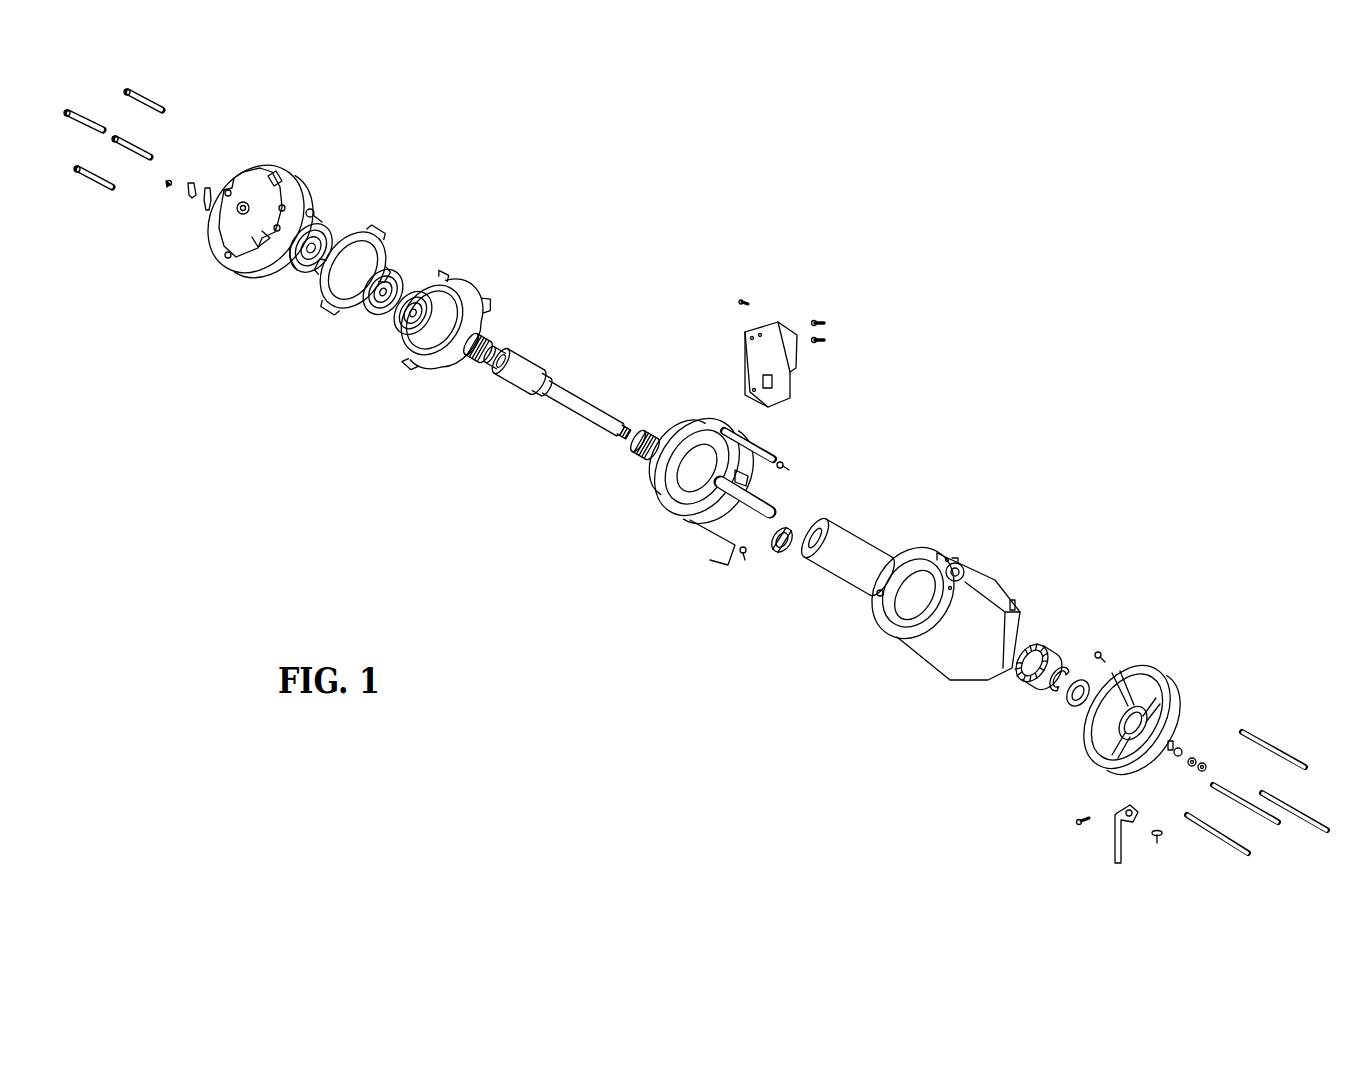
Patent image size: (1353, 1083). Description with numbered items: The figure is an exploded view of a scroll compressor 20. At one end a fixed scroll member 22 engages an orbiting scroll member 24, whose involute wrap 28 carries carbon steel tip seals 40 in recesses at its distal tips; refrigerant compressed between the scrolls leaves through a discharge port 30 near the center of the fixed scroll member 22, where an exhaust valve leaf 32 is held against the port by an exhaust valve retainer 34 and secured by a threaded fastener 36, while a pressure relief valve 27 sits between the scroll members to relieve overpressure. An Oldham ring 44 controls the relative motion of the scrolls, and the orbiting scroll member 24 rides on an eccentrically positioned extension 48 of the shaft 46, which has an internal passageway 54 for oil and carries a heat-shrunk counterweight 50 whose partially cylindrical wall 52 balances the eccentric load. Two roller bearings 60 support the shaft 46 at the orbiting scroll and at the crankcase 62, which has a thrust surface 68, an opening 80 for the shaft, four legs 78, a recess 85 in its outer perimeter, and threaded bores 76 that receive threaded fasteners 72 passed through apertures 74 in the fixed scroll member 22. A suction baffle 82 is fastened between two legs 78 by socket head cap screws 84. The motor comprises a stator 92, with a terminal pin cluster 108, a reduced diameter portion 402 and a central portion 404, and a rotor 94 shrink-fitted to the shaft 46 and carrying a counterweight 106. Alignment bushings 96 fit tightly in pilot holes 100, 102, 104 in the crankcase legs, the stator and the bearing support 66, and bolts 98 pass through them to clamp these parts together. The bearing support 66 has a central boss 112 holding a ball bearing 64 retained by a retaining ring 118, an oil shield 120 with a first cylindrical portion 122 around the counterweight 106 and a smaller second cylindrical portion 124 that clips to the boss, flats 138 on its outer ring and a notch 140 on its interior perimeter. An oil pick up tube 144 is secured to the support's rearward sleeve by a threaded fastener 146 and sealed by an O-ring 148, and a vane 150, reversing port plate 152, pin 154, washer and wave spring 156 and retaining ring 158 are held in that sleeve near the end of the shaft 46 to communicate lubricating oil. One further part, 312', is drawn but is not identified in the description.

The scroll compressor 20 is at (942, 271).
The fixed scroll member 22 is at (298, 200).
The orbiting scroll member 24 is at (445, 290).
The pressure relief valve 27 is at (311, 211).
The involute wrap 28 is at (413, 305).
The discharge port 30 is at (247, 203).
The exhaust valve leaf 32 is at (207, 210).
The exhaust valve retainer 34 is at (188, 200).
The threaded fastener 36 is at (166, 185).
The tip seals 40 is at (318, 226).
The Oldham ring 44 is at (370, 240).
The shaft 46 is at (577, 410).
The eccentrically positioned extension 48 is at (500, 377).
The counterweight 50 is at (527, 353).
The partially cylindrical wall 52 is at (545, 380).
The internal passageway 54 is at (500, 362).
The roller bearings 60 is at (473, 367).
The crankcase 62 is at (713, 515).
The ball bearing 64 is at (1068, 706).
The bearing support 66 is at (1162, 668).
The thrust surface 68 is at (680, 493).
The threaded fasteners 72 is at (92, 170).
The apertures 74 is at (228, 190).
The threaded bores 76 is at (710, 433).
The legs 78 is at (775, 458).
The opening 80 is at (700, 467).
The suction baffle 82 is at (748, 479).
The socket head cap screws 84 is at (745, 302).
The recess 85 is at (733, 433).
The stator 92 is at (933, 662).
The rotor 94 is at (882, 553).
The alignment bushings 96 is at (784, 467).
The bolts 98 is at (1290, 769).
The pilot holes 100 is at (733, 540).
The pilot holes 102 is at (950, 560).
The pilot holes 104 is at (1097, 764).
The counterweight 106 is at (880, 597).
The terminal pin cluster 108 is at (987, 580).
The central boss 112 is at (1150, 708).
The retaining ring 118 is at (1058, 667).
The oil shield 120 is at (1038, 646).
The cylindrical portion 122 is at (1013, 678).
The second substantially cylindrical portion 124 is at (1033, 684).
The flats 138 is at (1163, 697).
The notch 140 is at (1108, 678).
The oil pick up tube 144 is at (1115, 867).
The threaded fastener 146 is at (1078, 824).
The O-ring 148 is at (1156, 843).
The vane 150 is at (1183, 750).
The reversing port plate 152 is at (1207, 765).
The pin 154 is at (1188, 764).
The washer and wave spring 156 is at (1193, 772).
The retaining ring 158 is at (1258, 741).
The bracket 312' is at (781, 332).
The reduced diameter portion 402 is at (910, 553).
The central portion 404 is at (1013, 587).